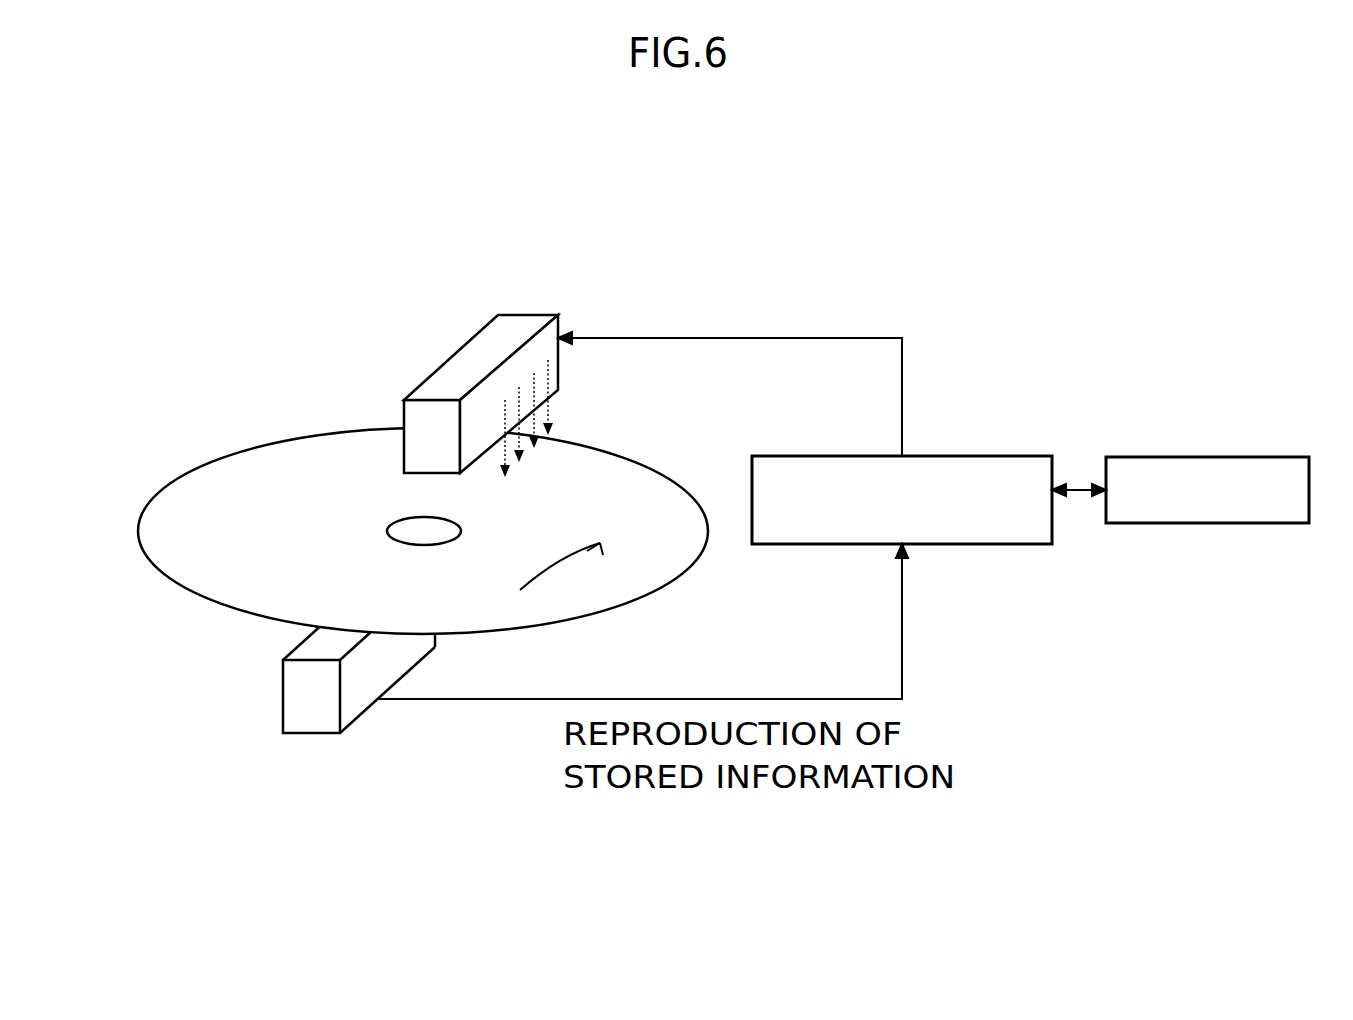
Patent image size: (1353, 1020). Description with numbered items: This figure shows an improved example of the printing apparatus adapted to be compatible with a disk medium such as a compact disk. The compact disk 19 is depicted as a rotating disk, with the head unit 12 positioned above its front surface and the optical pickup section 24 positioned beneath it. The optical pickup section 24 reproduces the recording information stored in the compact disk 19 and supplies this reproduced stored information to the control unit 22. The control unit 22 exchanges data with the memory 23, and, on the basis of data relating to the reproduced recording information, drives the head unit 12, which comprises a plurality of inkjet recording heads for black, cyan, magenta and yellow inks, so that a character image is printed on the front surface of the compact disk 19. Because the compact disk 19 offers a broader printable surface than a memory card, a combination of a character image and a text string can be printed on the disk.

The head unit 12 is at (515, 323).
The compact disk 19 is at (188, 490).
The control unit 22 is at (982, 455).
The memory 23 is at (1208, 456).
The optical pickup section 24 is at (307, 715).